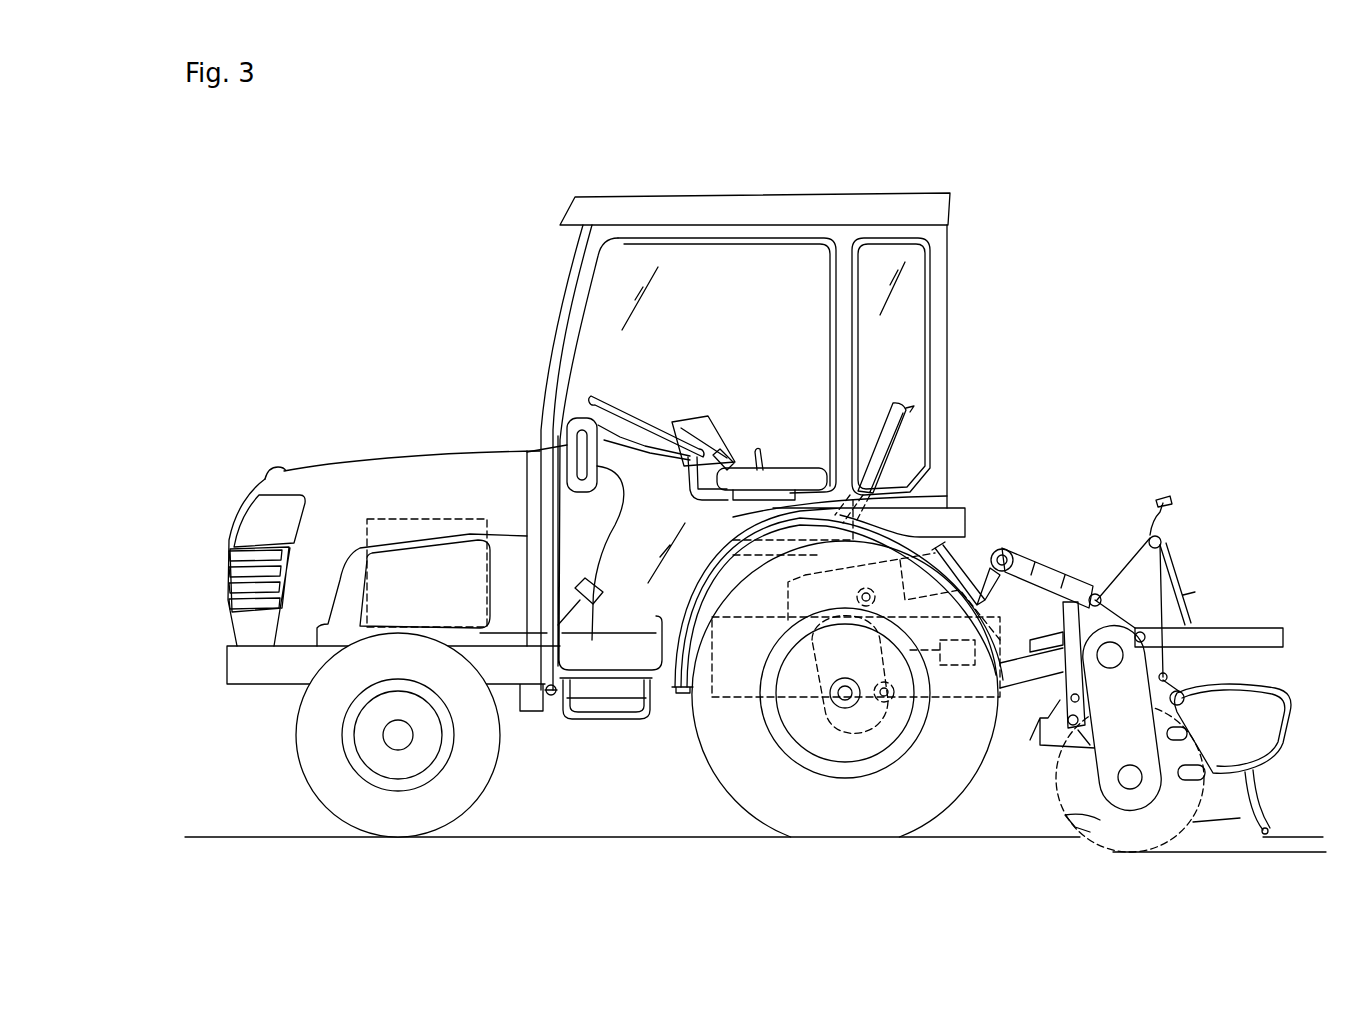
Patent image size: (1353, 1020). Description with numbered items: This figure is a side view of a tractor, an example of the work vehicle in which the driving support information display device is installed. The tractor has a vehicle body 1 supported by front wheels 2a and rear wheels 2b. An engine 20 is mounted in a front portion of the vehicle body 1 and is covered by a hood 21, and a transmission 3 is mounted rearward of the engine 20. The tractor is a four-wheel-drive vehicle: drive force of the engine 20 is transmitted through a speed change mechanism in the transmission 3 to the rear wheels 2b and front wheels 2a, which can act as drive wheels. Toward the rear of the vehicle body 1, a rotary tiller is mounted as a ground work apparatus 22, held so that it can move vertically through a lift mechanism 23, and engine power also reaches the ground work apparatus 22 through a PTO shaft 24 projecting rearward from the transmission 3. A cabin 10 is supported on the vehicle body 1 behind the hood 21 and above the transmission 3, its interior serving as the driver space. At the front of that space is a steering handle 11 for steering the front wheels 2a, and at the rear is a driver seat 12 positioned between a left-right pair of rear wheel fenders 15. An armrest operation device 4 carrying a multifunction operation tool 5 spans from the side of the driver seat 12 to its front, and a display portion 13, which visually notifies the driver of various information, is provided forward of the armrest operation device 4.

The vehicle body 1 is at (243, 688).
The front wheels 2a is at (325, 806).
The rear wheels 2b is at (737, 801).
The transmission 3 is at (716, 690).
The armrest operation device 4 is at (797, 467).
The multifunction operation tool 5 is at (733, 460).
The cabin 10 is at (575, 272).
The steering handle 11 is at (648, 445).
The driver seat 12 is at (900, 405).
The display portion 13 is at (701, 433).
The rear wheel fenders 15 is at (960, 508).
The engine 20 is at (427, 517).
The hood 21 is at (338, 480).
The ground work apparatus 22 is at (1231, 541).
The lift mechanism 23 is at (1026, 552).
The PTO shaft 24 is at (963, 700).